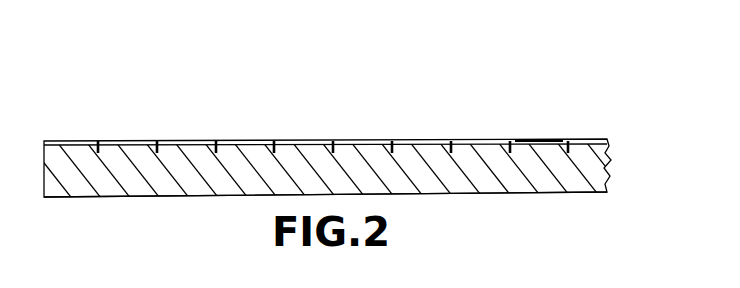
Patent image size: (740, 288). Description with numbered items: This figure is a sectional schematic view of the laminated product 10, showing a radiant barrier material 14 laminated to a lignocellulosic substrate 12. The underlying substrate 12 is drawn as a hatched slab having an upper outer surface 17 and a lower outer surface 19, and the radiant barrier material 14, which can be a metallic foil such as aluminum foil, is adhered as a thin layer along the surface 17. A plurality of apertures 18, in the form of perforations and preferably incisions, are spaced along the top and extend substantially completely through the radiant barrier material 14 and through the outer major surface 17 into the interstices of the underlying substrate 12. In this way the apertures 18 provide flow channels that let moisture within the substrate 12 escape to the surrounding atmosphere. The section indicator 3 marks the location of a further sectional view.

The laminated product 10 is at (78, 118).
The lignocellulosic substrate 12 is at (610, 152).
The radiant barrier material 14 is at (365, 140).
The outer surface 17 is at (535, 140).
The apertures 18 is at (220, 142).
The outer surface 19 is at (525, 193).
The section line 3- 3 is at (156, 118).